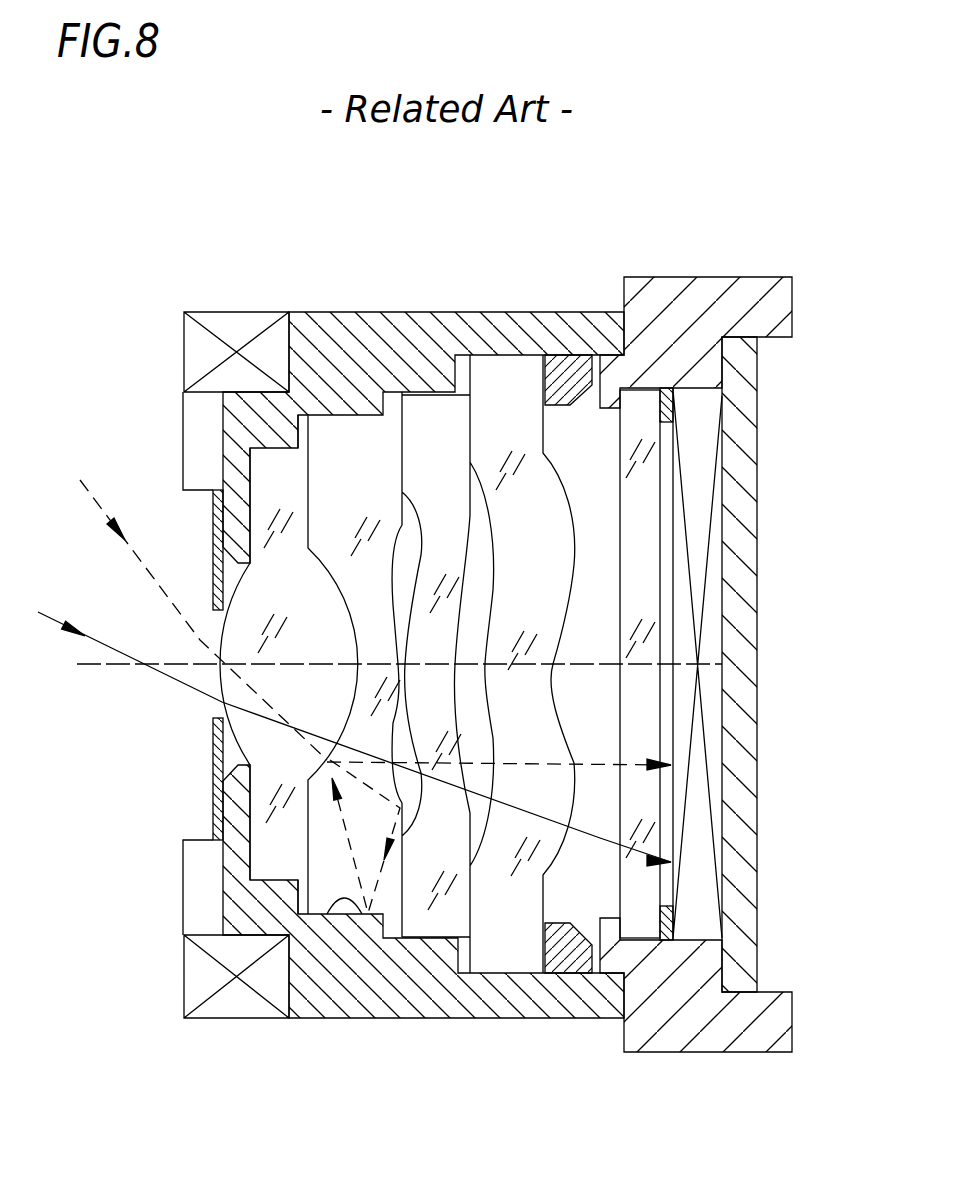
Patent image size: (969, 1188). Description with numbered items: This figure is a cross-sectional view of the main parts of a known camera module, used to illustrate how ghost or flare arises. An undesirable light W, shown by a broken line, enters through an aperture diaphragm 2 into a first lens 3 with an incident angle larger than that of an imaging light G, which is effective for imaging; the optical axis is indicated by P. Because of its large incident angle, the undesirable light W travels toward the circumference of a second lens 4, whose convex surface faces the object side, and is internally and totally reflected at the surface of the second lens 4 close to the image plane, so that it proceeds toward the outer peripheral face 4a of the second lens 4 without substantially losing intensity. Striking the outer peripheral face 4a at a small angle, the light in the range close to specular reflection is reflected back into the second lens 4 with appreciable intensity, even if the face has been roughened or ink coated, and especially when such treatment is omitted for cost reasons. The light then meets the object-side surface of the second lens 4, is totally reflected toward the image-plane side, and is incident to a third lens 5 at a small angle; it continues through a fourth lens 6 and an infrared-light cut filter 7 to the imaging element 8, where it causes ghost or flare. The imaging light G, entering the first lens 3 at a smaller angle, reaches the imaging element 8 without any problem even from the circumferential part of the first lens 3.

The aperture diaphragm 2 is at (213, 758).
The first lens 3 is at (263, 824).
The second lens 4 is at (330, 860).
The outer peripheral face 4a is at (330, 914).
The third lens 5 is at (430, 923).
The fourth lens 6 is at (522, 960).
The infrared-light cut filter 7 is at (640, 933).
The imaging element 8 is at (715, 750).
The optical axis P is at (100, 666).
The imaging light G is at (55, 620).
The undesirable light W is at (97, 503).